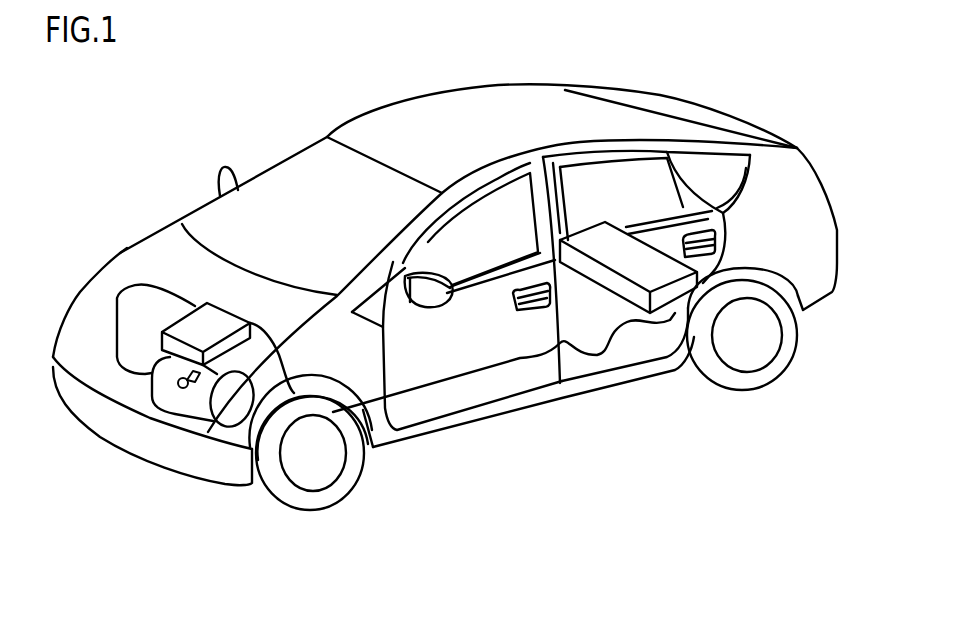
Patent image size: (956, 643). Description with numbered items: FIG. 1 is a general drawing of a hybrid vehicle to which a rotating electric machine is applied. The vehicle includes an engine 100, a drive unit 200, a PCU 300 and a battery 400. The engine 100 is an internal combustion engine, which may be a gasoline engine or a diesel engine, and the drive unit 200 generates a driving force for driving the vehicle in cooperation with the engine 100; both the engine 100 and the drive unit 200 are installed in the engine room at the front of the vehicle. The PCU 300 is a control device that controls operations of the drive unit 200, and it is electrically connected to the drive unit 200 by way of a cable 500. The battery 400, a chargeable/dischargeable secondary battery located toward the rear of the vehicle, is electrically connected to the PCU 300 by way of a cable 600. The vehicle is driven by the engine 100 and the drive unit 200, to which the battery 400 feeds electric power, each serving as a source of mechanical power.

The engine 100 is at (140, 362).
The drive unit 200 is at (228, 418).
The PCU 300 is at (207, 316).
The battery 400 is at (683, 293).
The cable 500 is at (194, 390).
The cable 600 is at (493, 367).